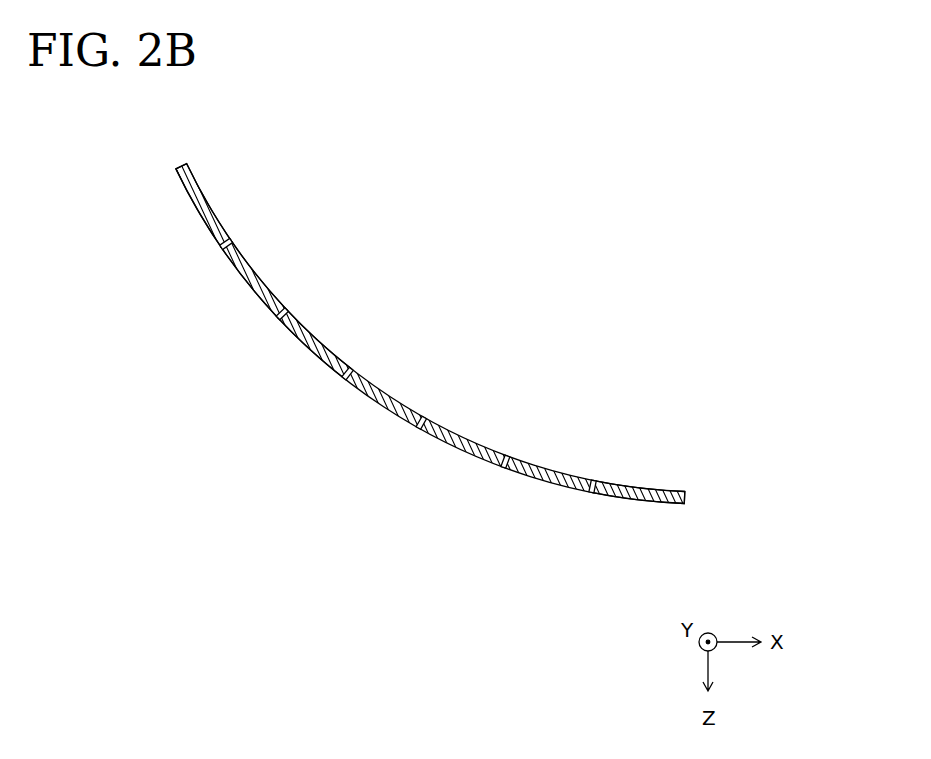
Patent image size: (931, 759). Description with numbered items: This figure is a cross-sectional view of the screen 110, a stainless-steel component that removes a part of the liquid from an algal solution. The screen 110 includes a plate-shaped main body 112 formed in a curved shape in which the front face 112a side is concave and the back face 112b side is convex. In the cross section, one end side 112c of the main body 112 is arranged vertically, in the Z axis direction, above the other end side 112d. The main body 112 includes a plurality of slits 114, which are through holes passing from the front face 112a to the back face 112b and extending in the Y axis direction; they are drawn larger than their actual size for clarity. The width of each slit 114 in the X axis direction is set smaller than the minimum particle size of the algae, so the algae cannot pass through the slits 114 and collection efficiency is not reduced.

The screen 110 is at (497, 171).
The main body 112 is at (547, 459).
The front face 112a is at (266, 279).
The back face 112b is at (300, 344).
The one end side 112c is at (179, 165).
The other end side 112d is at (686, 506).
The slits 114 is at (347, 381).